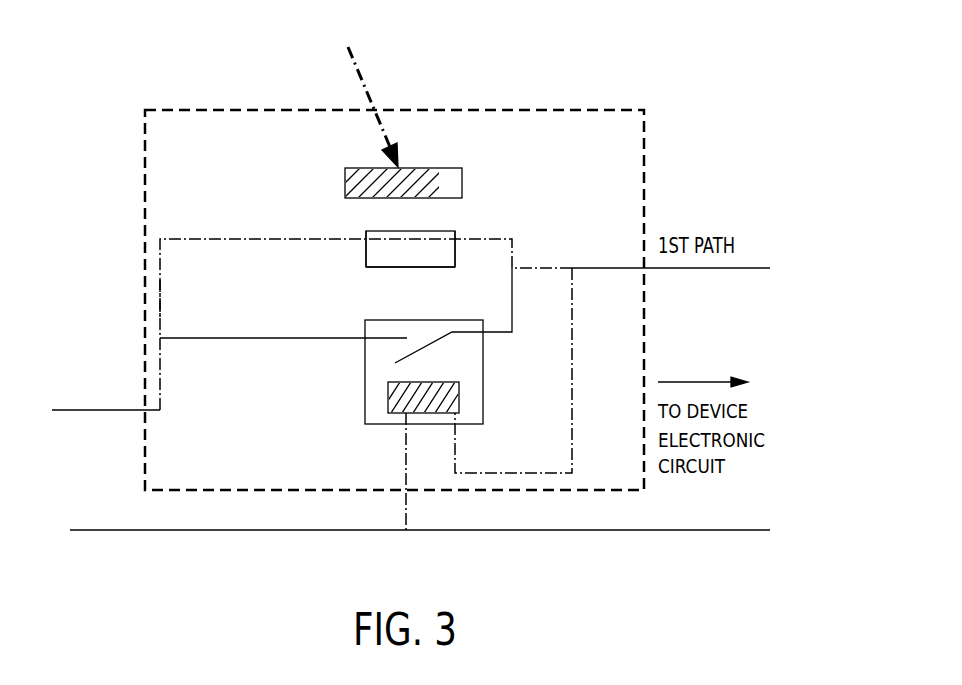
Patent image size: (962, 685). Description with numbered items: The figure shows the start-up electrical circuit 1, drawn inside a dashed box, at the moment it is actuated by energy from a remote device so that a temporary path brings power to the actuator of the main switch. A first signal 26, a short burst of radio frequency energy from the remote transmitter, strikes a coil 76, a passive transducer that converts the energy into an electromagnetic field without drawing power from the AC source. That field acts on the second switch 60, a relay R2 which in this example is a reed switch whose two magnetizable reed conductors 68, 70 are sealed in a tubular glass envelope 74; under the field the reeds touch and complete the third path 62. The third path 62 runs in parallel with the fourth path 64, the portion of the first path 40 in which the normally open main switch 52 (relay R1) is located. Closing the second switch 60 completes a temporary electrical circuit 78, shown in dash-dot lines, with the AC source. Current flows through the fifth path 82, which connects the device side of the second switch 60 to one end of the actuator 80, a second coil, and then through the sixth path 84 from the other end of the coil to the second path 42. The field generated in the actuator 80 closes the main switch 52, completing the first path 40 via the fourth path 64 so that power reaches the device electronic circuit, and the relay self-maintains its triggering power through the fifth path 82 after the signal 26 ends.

The start-up electrical circuit 1 is at (240, 110).
The first signal 26 is at (376, 94).
The first path 40 is at (110, 410).
The second path 42 is at (272, 530).
The main switch 52 is at (418, 340).
The second switch 60 is at (356, 218).
The third path 62 is at (220, 238).
The fourth path 64 is at (293, 338).
The reed conductor 68 is at (440, 239).
The reed conductor 70 is at (426, 251).
The tubular glass envelope 74 is at (366, 237).
The coil 76 is at (357, 168).
The temporary electrical circuit 78 is at (160, 298).
The actuator 80 is at (388, 392).
The fifth path 82 is at (572, 415).
The sixth path 84 is at (408, 507).